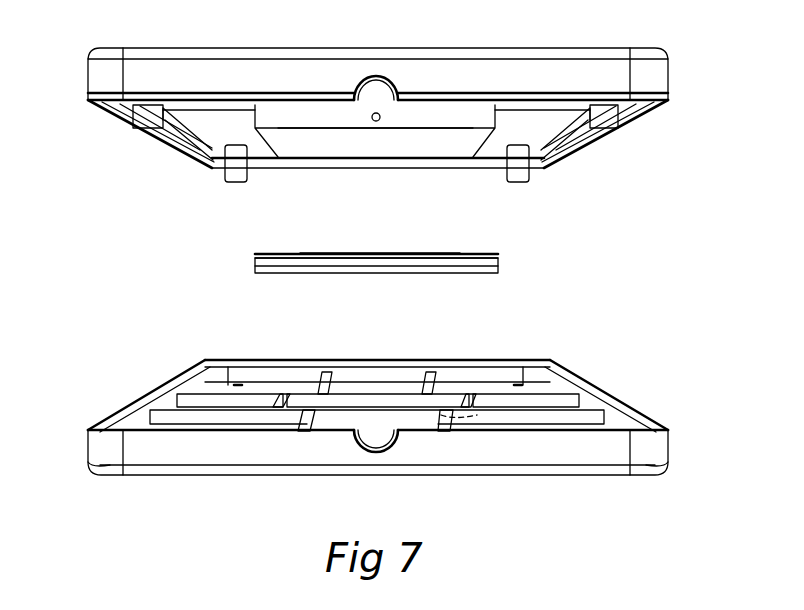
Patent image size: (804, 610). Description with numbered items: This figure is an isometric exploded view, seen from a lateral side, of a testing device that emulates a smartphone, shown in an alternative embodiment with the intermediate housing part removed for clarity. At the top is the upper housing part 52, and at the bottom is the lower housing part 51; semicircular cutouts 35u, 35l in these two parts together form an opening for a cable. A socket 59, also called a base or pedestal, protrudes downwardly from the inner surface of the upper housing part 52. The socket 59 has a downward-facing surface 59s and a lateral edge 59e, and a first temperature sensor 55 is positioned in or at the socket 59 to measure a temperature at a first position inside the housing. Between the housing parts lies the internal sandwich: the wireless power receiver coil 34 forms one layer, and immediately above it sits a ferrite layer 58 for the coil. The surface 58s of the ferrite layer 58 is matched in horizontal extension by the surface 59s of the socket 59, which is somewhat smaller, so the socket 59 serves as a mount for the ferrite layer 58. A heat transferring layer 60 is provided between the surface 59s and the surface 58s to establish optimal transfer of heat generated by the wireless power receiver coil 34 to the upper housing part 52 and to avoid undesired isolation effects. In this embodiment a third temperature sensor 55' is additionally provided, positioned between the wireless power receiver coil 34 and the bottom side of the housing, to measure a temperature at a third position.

The upper housing part 52 is at (96, 78).
The semicircular cutout 35u is at (375, 92).
The socket 59 is at (490, 130).
The surface of the socket 59s is at (318, 138).
The lateral edge of the socket 59e is at (266, 125).
The first temperature sensor 55 is at (389, 155).
The ferrite layer 58 is at (255, 260).
The heat transferring layer 60 is at (255, 253).
The surface of the ferrite layer 58s is at (452, 254).
The wireless power receiver coil 34 is at (255, 267).
The lower housing part 51 is at (96, 452).
The semicircular cutout 35l is at (384, 447).
The third temperature sensor 55' is at (434, 404).